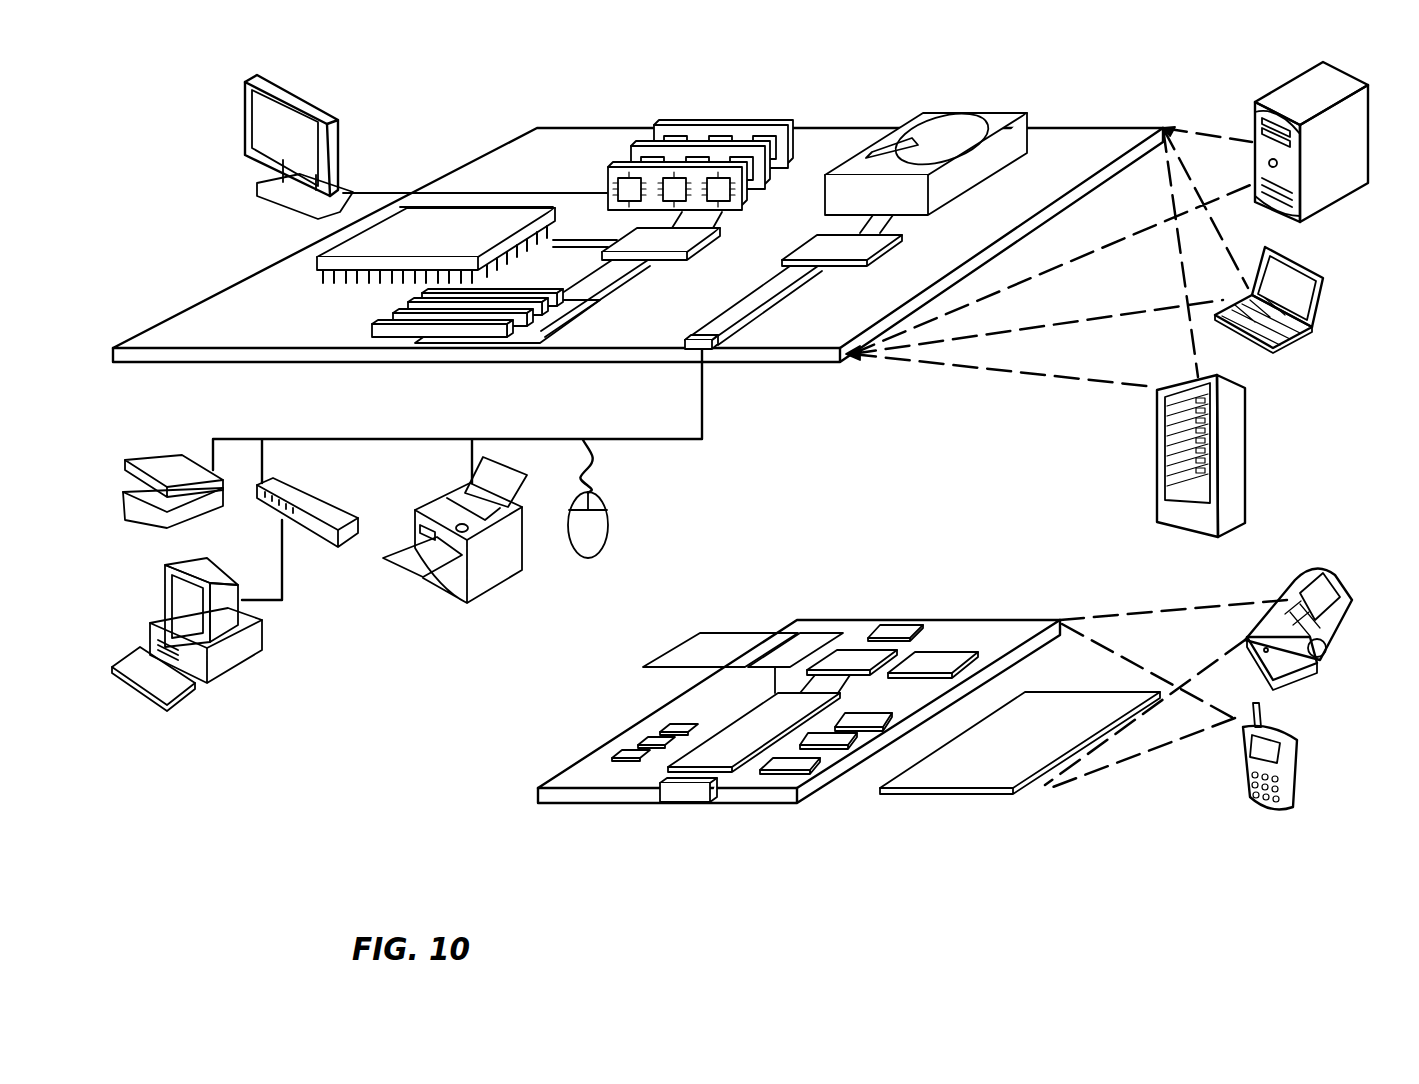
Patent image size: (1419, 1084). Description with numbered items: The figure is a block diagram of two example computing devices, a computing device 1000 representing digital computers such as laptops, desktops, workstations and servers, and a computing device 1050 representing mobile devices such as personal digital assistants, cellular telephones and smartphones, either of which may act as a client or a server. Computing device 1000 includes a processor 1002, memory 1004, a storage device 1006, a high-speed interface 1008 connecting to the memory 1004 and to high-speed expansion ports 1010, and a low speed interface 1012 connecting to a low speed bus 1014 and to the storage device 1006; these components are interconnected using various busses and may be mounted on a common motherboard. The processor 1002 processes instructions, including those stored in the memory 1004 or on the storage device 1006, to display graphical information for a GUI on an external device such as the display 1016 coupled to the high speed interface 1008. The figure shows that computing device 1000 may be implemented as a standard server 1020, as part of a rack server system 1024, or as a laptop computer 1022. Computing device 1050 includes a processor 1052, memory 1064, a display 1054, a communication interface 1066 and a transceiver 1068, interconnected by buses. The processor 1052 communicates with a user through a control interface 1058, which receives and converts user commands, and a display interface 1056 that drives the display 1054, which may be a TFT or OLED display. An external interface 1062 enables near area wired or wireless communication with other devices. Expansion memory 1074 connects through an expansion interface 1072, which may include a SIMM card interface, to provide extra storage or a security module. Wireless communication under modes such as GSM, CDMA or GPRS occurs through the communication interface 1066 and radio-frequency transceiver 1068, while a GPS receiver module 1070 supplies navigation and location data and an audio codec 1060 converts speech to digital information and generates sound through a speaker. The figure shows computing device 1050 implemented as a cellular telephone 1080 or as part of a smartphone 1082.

The computing device 1000 is at (447, 98).
The processor 1002 is at (316, 259).
The memory 1004 is at (660, 122).
The storage device 1006 is at (920, 110).
The high-speed interface 1008 is at (628, 243).
The high-speed expansion ports 1010 is at (393, 322).
The low speed interface 1012 is at (820, 243).
The low speed bus 1014 is at (712, 350).
The display 1016 is at (248, 82).
The standard server 1020 is at (1255, 117).
The laptop computer 1022 is at (1327, 280).
The rack server system 1024 is at (1157, 478).
The computing device 1050 is at (505, 808).
The processor 1052 is at (725, 760).
The display 1054 is at (975, 778).
The display interface 1056 is at (795, 767).
The control interface 1058 is at (835, 740).
The audio codec 1060 is at (860, 720).
The external interface 1062 is at (690, 785).
The memory 1064 is at (640, 745).
The communication interface 1066 is at (850, 660).
The transceiver 1068 is at (935, 657).
The GPS receiver module 1070 is at (895, 628).
The expansion interface 1072 is at (775, 637).
The expansion memory 1074 is at (700, 633).
The cellular telephone 1080 is at (1288, 545).
The smartphone 1082 is at (1245, 758).